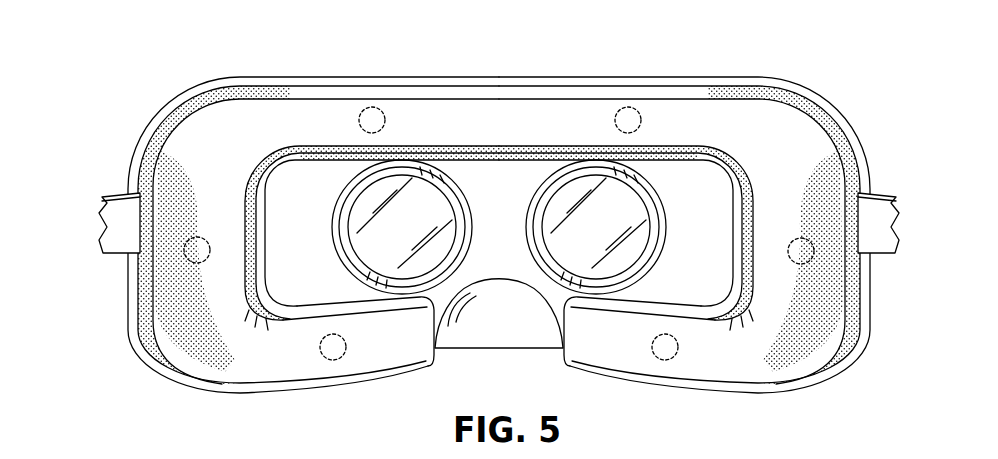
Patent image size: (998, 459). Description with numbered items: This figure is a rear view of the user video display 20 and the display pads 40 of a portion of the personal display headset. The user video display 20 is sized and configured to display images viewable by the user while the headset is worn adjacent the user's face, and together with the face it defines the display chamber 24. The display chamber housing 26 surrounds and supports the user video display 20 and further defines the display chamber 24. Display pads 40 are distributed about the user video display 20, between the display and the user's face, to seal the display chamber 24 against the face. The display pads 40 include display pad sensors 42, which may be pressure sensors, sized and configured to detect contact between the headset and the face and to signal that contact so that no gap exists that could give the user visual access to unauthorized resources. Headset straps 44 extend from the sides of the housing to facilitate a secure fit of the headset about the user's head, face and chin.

The user video display 20 is at (180, 76).
The display chamber 24 is at (284, 279).
The display chamber housing 26 is at (165, 127).
The display pads 40 is at (765, 363).
The display pad sensors 42 is at (372, 107).
The headset straps 44 is at (122, 220).